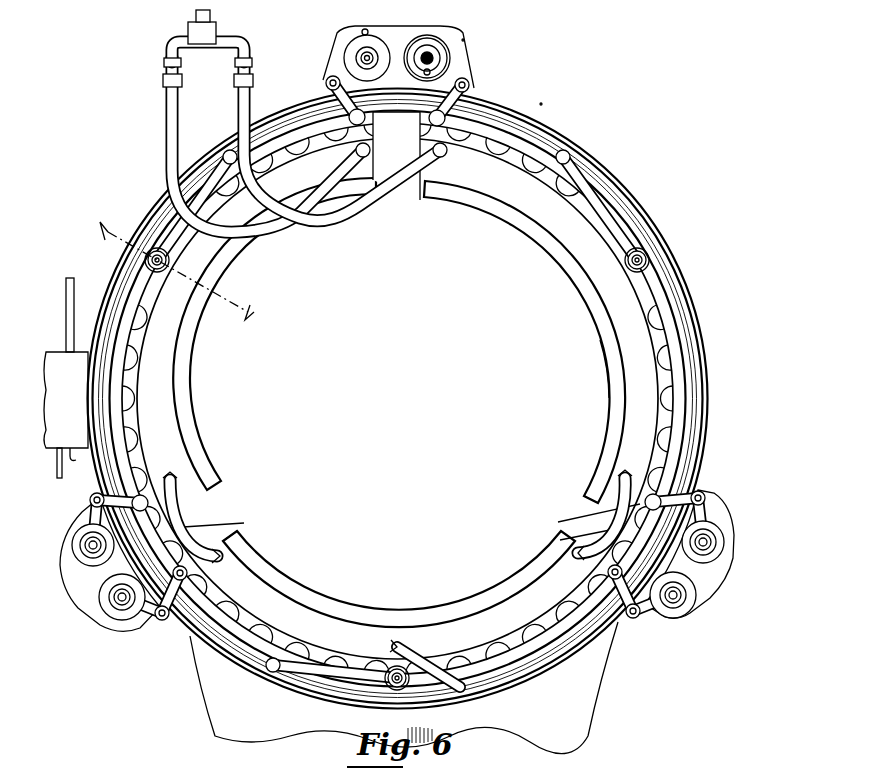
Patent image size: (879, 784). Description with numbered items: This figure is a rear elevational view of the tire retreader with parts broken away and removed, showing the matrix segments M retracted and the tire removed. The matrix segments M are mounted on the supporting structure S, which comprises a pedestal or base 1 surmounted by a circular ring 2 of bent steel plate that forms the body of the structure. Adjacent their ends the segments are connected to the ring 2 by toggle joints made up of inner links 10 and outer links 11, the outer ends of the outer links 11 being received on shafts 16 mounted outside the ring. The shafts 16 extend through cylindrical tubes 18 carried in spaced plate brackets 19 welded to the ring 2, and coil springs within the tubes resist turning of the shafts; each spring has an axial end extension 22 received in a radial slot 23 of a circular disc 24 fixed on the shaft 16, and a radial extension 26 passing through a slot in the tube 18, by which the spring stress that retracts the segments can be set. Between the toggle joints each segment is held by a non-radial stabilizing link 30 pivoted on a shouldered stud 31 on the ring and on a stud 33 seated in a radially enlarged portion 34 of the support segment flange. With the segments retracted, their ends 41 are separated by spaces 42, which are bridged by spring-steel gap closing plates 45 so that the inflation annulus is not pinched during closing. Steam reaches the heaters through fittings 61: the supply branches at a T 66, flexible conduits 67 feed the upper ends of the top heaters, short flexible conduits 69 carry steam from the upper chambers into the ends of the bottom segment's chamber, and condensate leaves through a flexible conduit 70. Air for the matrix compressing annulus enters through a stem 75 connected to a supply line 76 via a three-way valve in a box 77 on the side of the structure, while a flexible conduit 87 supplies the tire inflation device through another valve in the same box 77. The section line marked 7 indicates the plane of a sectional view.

The pedestal or base 1 is at (598, 705).
The circular ring 2 is at (612, 178).
The section line 7- 7 is at (174, 267).
The inner links 10 is at (330, 100).
The outer links 11 is at (345, 95).
The shafts 16 is at (455, 65).
The cylindrical steel tubes or barrels 18 is at (440, 30).
The plate brackets 19 is at (398, 27).
The axial end extension 22 is at (425, 78).
The radial slot 23 is at (470, 72).
The circular disc 24 is at (447, 52).
The radial extension 26 is at (364, 31).
The stabilizing links 30 is at (180, 215).
The shouldered stud 31 is at (228, 150).
The stud 33 is at (166, 260).
The radially enlarged portion 34 is at (160, 272).
The ends of the segments 41 is at (420, 205).
The spaces 42 is at (590, 500).
The gap closing plates 45 is at (390, 120).
The threaded fittings 61 is at (335, 160).
The T 66 is at (192, 33).
The flexible conduits 67 is at (250, 80).
The short flexible steam conduits 69 is at (205, 524).
The flexible conduit 70 is at (430, 655).
The stem or conduit 75 is at (74, 462).
The supply line 76 is at (66, 284).
The box 77 is at (58, 352).
The flexible conduit 87 is at (57, 475).
The supporting structure S is at (540, 103).
The matrix segments M is at (600, 350).